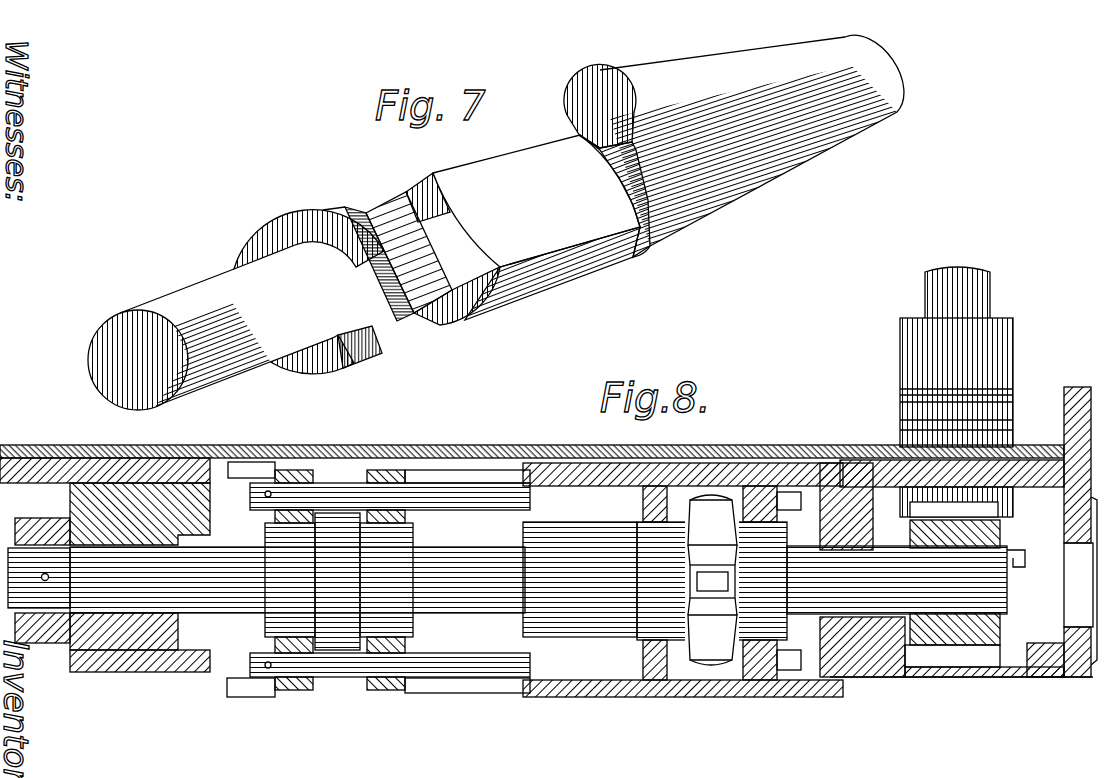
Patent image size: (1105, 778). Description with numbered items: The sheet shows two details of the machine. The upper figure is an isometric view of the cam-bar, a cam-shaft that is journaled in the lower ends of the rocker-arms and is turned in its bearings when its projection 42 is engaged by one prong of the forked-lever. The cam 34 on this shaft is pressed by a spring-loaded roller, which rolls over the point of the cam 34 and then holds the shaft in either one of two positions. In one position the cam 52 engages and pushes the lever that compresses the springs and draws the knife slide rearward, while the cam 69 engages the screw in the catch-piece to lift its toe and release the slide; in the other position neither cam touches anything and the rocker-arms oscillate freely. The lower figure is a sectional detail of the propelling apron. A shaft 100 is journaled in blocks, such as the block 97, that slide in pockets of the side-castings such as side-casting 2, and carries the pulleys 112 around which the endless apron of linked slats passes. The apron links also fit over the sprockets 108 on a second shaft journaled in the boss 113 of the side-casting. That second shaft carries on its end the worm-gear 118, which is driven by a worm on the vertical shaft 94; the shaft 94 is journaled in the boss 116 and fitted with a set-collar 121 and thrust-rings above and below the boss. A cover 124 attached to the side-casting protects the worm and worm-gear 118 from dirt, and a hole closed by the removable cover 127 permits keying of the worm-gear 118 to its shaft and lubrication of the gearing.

In FIG. 8, the side-casting 2 is at (1088, 412).
In FIG. 7, the cam 34 is at (416, 315).
In FIG. 7, the projection 42 is at (642, 63).
In FIG. 7, the cam 52 is at (523, 228).
In FIG. 7, the cam 69 is at (577, 272).
In FIG. 8, the vertical shaft 94 is at (990, 290).
In FIG. 8, the block 97 is at (70, 500).
In FIG. 8, the shaft 100 is at (266, 580).
In FIG. 8, the sprocket 108 is at (712, 580).
In FIG. 8, the pulley 112 is at (339, 581).
In FIG. 8, the boss 113 is at (833, 643).
In FIG. 8, the boss 116 is at (1013, 428).
In FIG. 8, the worm-gear 118 is at (1000, 631).
In FIG. 8, the set-collar 121 is at (1013, 340).
In FIG. 8, the cover 124 is at (963, 587).
In FIG. 8, the removable cover 127 is at (1027, 558).